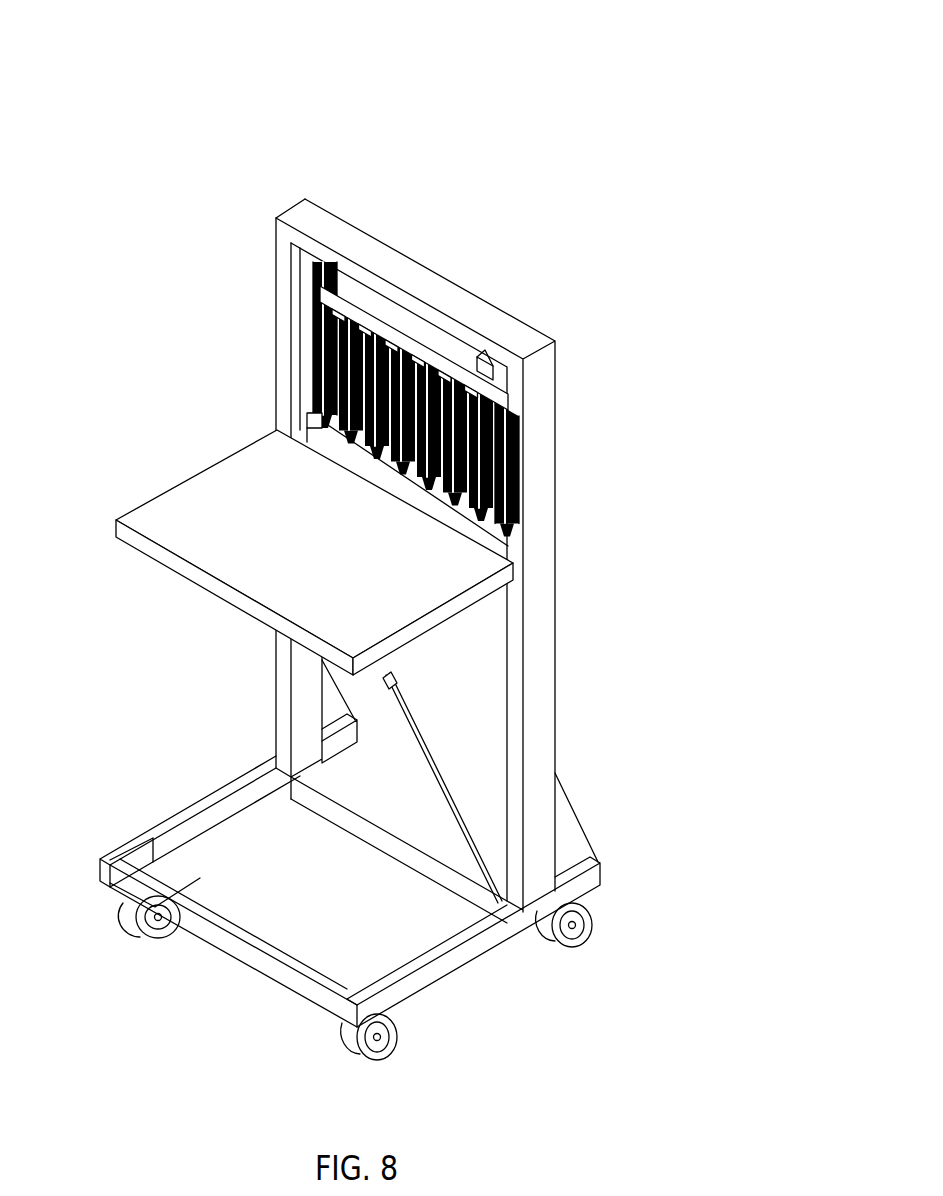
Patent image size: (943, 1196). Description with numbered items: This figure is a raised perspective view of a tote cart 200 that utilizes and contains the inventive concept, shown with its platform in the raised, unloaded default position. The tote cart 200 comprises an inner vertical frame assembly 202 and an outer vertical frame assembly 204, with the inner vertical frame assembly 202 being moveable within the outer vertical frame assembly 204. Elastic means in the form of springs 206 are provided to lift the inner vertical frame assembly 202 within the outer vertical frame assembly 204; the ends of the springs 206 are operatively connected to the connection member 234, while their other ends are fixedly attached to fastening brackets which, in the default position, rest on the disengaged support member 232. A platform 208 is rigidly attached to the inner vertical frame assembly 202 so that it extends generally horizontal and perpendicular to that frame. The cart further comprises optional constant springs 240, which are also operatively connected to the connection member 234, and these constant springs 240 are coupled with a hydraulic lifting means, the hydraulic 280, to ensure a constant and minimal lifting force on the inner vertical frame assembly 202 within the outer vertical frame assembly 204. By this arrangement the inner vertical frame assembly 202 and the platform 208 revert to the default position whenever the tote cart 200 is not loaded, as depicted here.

The tote cart 200 is at (627, 190).
The inner vertical frame assembly 202 is at (292, 333).
The outer vertical frame assembly 204 is at (567, 407).
The springs 206 is at (358, 387).
The platform 208 is at (188, 500).
The disengaged support member 232 is at (507, 382).
The connection member 234 is at (332, 440).
The constant springs 240 is at (318, 292).
The hydraulic 280 is at (415, 737).